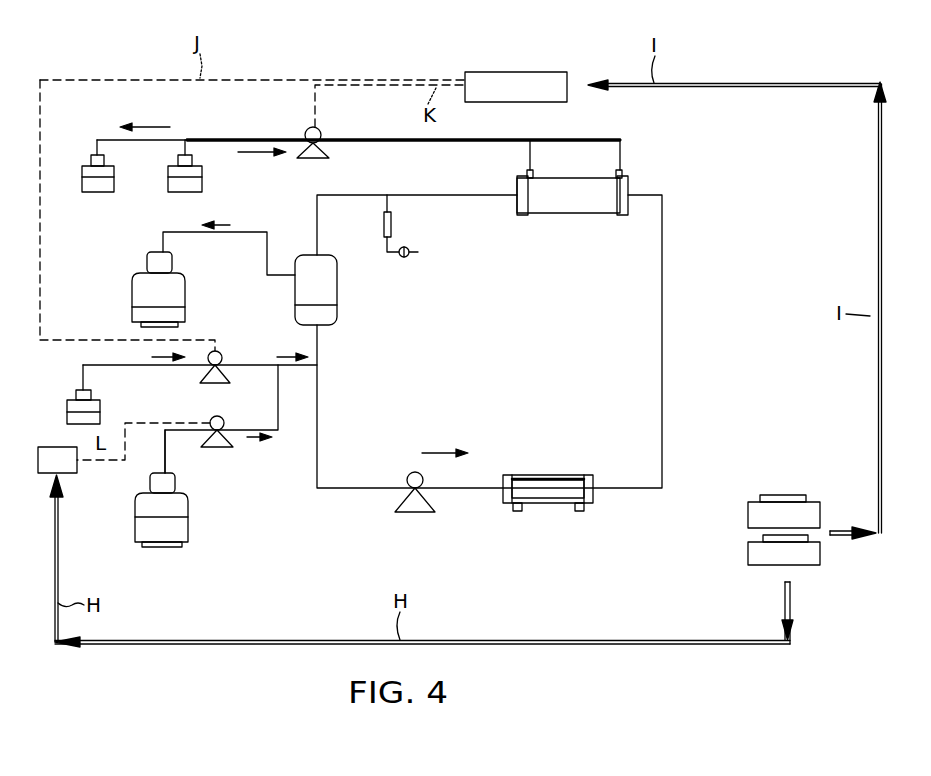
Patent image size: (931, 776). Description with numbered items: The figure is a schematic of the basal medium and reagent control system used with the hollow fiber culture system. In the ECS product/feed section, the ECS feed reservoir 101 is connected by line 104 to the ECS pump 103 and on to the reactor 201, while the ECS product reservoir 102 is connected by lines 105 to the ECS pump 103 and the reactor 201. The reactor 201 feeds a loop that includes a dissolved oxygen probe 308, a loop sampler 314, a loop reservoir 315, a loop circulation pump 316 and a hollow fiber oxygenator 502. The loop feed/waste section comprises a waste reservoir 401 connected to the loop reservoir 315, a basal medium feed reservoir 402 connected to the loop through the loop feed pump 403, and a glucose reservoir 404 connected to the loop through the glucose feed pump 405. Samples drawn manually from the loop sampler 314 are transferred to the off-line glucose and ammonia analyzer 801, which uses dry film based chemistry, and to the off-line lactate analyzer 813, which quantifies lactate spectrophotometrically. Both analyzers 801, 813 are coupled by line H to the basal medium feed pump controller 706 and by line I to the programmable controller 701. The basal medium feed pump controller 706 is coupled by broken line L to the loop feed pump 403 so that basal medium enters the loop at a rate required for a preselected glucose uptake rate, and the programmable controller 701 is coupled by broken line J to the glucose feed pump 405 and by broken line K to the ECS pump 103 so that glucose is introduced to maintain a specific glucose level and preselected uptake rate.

The ECS feed reservoir 101 is at (175, 192).
The ECS product reservoir 102 is at (98, 192).
The ECS pump 103 is at (335, 119).
The line 104 is at (260, 146).
The lines 105 is at (258, 135).
The reactor 201 is at (592, 206).
The dissolved oxygen probe 308 is at (166, 458).
The loop sampler 314 is at (393, 223).
The loop reservoir 315 is at (335, 301).
The loop circulation pump 316 is at (424, 475).
The waste reservoir 401 is at (177, 301).
The basal medium feed reservoir 402 is at (182, 507).
The loop feed pump 403 is at (206, 419).
The glucose reservoir 404 is at (68, 408).
The glucose feed pump 405 is at (222, 351).
The hollow fiber oxygenator 502 is at (557, 487).
The programmable controller 701 is at (535, 99).
The basal medium feed pump controller 706 is at (62, 470).
The glucose and ammonia analyzer 801 is at (803, 564).
The lactate analyzer 813 is at (803, 525).